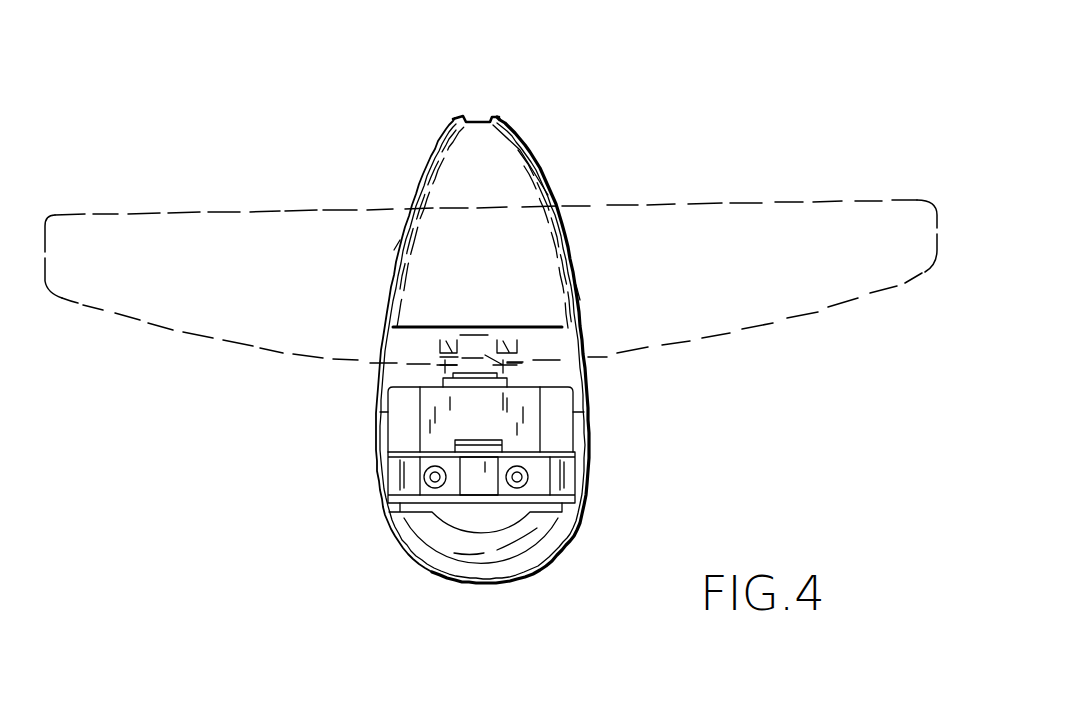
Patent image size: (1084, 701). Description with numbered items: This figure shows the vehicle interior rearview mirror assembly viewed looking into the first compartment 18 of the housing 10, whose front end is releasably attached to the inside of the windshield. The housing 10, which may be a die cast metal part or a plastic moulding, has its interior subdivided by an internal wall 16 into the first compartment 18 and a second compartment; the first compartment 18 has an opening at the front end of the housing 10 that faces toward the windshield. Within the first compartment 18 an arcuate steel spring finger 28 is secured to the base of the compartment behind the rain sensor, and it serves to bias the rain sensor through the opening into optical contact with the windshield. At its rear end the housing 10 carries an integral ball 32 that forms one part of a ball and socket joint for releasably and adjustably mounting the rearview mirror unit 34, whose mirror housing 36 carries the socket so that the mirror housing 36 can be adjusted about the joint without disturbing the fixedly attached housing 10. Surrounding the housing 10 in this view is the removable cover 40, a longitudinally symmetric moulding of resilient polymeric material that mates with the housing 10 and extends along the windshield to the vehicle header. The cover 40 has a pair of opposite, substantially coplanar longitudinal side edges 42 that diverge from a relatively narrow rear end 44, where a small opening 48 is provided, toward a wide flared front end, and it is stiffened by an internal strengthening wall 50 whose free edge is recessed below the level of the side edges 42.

The housing 10 is at (560, 550).
The internal wall 16 is at (560, 400).
The first compartment 18 is at (463, 515).
The arcuate steel spring finger 28 is at (482, 463).
The ball 32 is at (437, 330).
The rearview mirror unit 34 is at (748, 198).
The mirror housing 36 is at (517, 347).
The removable cover 40 is at (565, 233).
The longitudinal side edges 42 is at (393, 257).
The narrow rear end 44 is at (525, 135).
The small opening 48 is at (478, 110).
The internal strengthening wall 50 is at (420, 327).